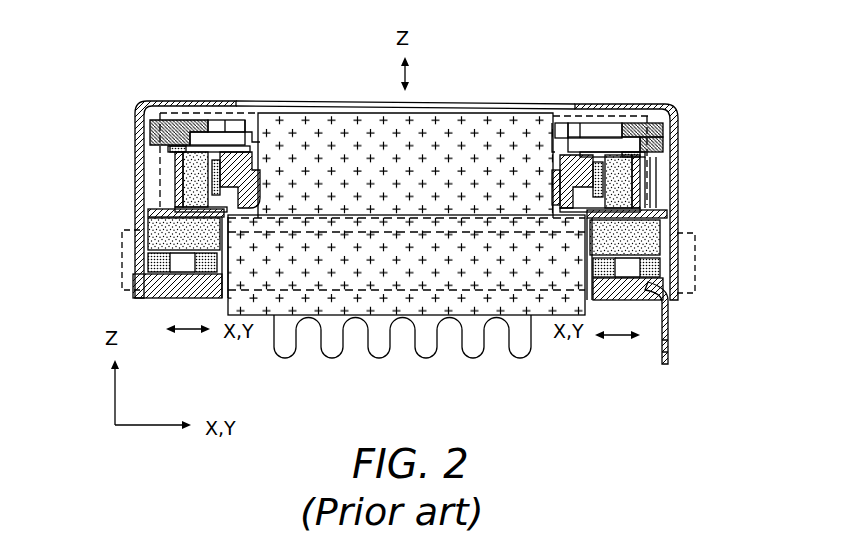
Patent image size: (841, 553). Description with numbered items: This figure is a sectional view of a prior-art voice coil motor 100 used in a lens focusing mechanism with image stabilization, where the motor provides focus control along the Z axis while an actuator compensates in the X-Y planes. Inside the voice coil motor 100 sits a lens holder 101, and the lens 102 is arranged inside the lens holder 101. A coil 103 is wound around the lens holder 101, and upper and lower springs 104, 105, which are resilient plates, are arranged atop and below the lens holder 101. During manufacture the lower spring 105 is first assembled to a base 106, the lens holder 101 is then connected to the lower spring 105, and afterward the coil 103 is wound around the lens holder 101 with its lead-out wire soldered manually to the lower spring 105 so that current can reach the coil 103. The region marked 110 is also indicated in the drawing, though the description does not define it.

The voice coil motor 100 is at (148, 170).
The lens holder 101 is at (243, 120).
The lens 102 is at (372, 128).
The coil 103 is at (215, 120).
The upper spring 104 is at (170, 149).
The lower spring 105 is at (182, 200).
The base 106 is at (165, 222).
The optical image stabilizer 110 is at (123, 242).